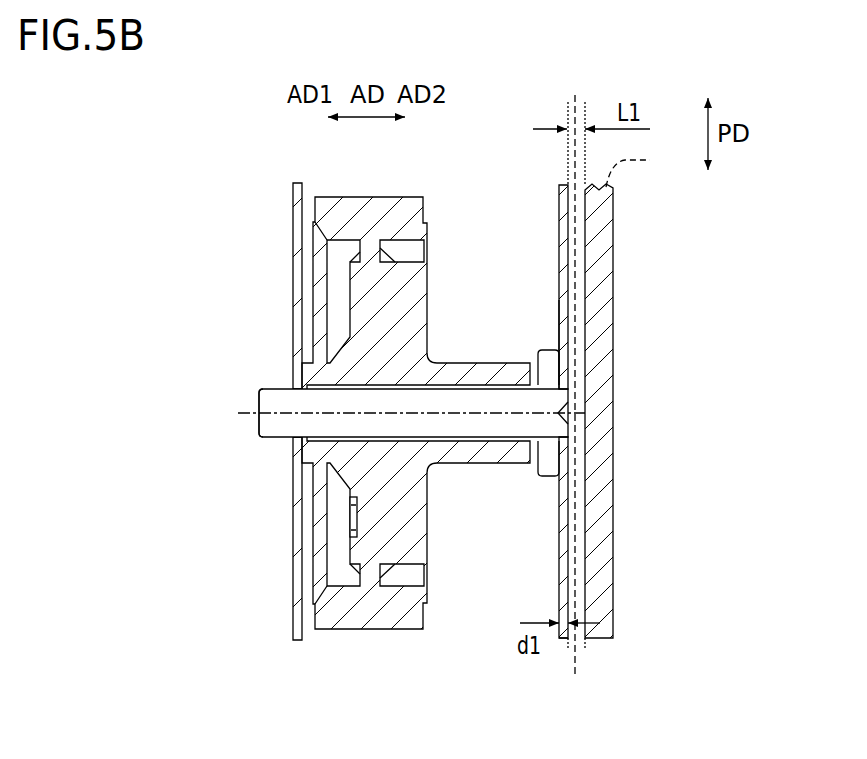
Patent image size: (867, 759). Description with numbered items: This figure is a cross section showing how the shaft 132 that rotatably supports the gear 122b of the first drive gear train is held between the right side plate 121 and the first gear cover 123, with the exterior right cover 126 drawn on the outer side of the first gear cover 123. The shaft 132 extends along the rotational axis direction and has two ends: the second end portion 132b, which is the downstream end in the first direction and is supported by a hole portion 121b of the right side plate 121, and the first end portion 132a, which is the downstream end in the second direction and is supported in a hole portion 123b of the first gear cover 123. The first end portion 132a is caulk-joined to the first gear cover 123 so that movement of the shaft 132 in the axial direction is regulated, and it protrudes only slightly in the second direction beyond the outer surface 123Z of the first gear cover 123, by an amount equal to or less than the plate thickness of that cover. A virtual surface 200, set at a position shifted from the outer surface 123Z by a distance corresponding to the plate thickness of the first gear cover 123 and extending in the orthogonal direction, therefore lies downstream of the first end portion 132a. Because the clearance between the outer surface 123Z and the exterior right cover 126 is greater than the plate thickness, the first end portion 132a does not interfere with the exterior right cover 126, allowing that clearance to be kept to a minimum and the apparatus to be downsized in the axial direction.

The right side plate 121 is at (297, 540).
The hole portion 121b is at (292, 388).
The gear 122b is at (387, 212).
The shaft 132 is at (373, 434).
The second end portion 132b is at (277, 402).
The first end portion 132a is at (570, 432).
The first gear cover 123 is at (567, 507).
The hole portion 123b is at (563, 385).
The outer surface 123Z is at (567, 600).
The exterior right cover 126 is at (600, 556).
The virtual surface 200 is at (650, 175).